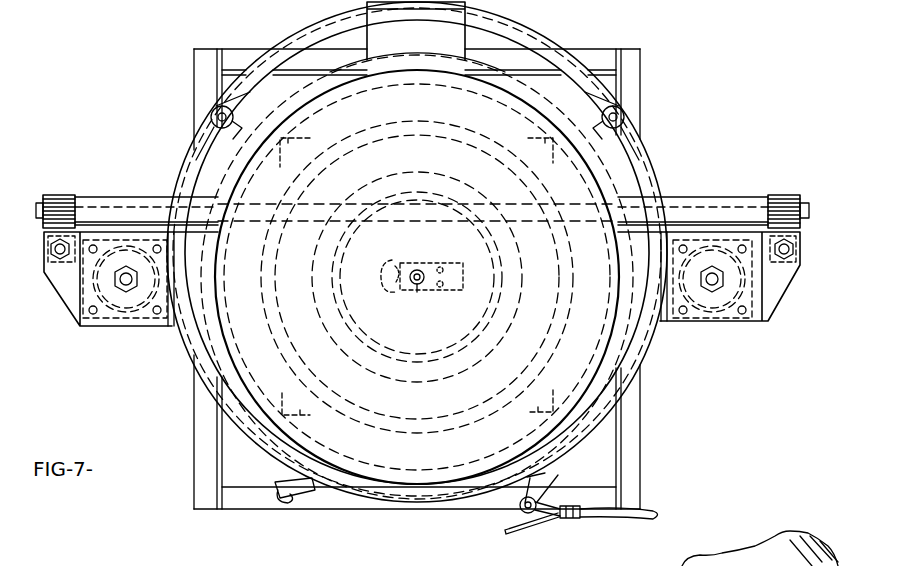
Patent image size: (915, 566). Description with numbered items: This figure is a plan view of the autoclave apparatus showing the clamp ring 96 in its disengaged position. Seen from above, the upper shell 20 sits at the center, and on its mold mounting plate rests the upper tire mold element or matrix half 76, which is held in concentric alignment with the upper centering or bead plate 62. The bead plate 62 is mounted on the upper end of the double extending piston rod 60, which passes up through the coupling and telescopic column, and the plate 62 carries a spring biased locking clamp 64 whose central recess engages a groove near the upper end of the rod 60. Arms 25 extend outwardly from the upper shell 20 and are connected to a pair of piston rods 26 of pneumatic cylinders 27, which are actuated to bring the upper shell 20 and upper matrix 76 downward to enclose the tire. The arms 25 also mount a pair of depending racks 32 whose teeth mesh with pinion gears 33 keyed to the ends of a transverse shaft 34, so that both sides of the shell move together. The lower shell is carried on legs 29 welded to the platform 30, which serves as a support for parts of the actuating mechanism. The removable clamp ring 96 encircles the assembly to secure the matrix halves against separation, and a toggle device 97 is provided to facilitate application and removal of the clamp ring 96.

The upper shell 20 is at (398, 403).
The arms 25 is at (193, 316).
The piston rods 26 is at (118, 288).
The pneumatic cylinders 27 is at (118, 320).
The legs 29 is at (305, 136).
The platform 30 is at (638, 458).
The depending racks 32 is at (812, 268).
The pinion gears 33 is at (62, 196).
The transverse shaft 34 is at (685, 198).
The piston rod 60 is at (410, 292).
The upper centering or bead plate 62 is at (398, 364).
The spring biased locking clamp 64 is at (394, 262).
The tire mold element or matrix half 76 is at (425, 435).
The clamp ring 96 is at (505, 27).
The toggle device 97 is at (560, 523).